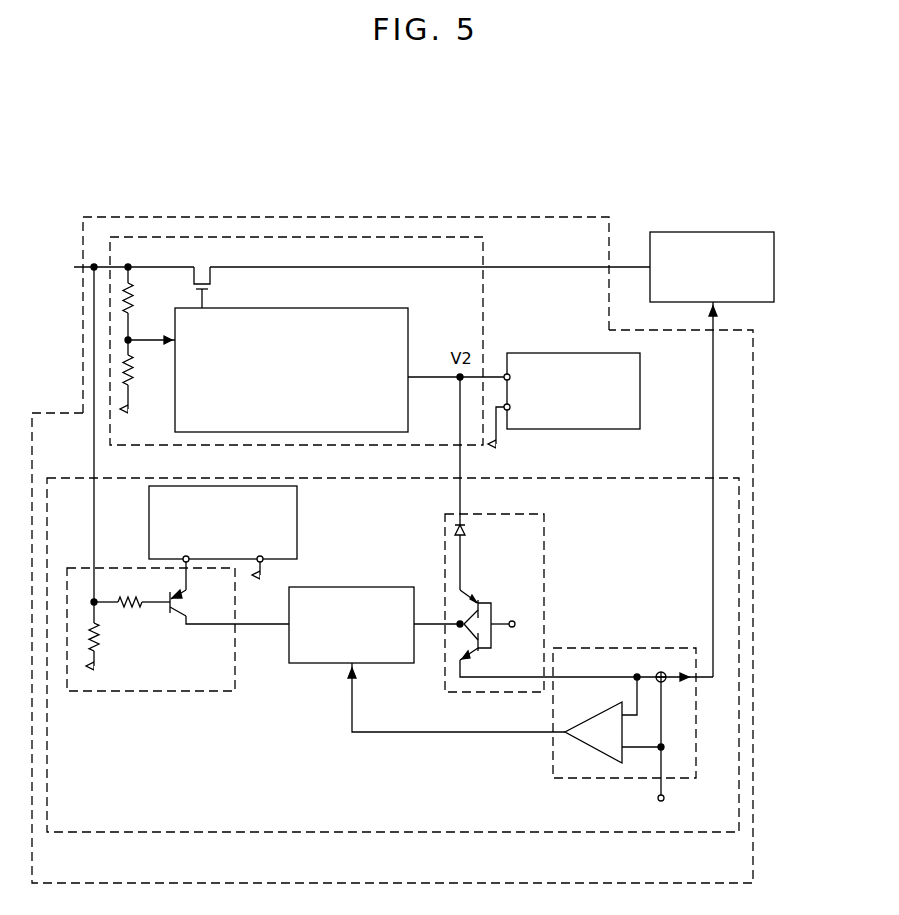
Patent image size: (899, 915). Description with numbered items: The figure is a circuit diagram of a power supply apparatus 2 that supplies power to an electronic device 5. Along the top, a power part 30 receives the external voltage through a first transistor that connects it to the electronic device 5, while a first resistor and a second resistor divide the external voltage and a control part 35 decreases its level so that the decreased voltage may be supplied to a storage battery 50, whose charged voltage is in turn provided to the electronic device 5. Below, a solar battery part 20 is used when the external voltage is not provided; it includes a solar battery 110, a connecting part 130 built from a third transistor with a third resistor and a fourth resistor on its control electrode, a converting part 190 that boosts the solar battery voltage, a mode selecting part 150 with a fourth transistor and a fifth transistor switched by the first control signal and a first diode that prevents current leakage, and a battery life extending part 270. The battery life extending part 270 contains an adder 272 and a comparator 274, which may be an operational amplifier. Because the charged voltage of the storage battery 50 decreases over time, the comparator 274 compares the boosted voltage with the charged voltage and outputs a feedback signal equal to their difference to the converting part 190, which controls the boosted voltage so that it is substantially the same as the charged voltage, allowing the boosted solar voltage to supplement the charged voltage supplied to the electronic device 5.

The power supply apparatus 2 is at (388, 217).
The electronic device 5 is at (712, 232).
The solar battery part 20 is at (754, 612).
The power part 30 is at (277, 237).
The control part 35 is at (409, 320).
The storage battery 50 is at (641, 392).
The solar battery 110 is at (298, 552).
The connecting part 130 is at (236, 682).
The mode selecting part 150 is at (545, 525).
The converting part 190 is at (390, 664).
The battery life extending part 270 is at (608, 648).
The adder 272 is at (661, 671).
The comparator 274 is at (593, 752).